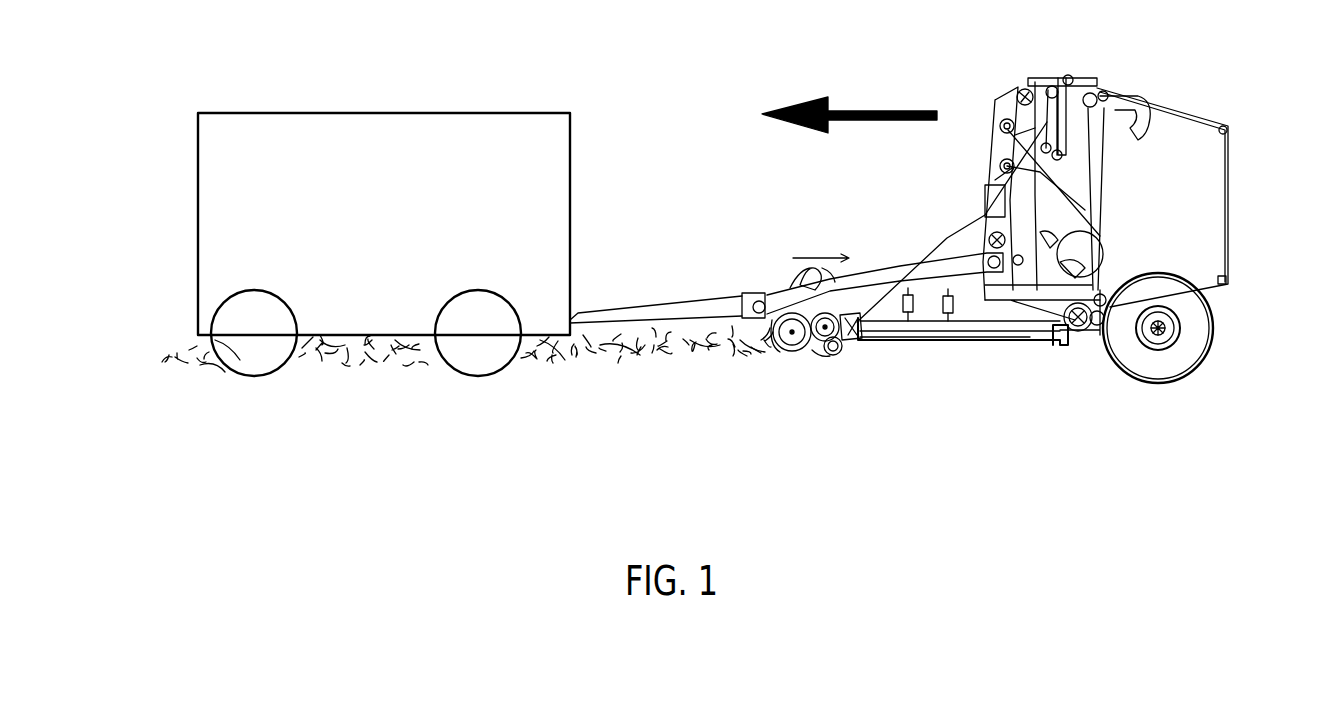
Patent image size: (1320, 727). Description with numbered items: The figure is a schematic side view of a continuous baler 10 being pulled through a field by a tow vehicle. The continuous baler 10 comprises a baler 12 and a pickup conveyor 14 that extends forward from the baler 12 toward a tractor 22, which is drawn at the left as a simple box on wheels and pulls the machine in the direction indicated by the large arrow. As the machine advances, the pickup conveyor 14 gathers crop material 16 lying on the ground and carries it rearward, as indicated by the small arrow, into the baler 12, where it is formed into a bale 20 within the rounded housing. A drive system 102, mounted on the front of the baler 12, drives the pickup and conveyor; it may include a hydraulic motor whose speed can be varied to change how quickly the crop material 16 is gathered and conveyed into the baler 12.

The continuous baler 10 is at (923, 240).
The baler 12 is at (1210, 190).
The pickup conveyor 14 is at (898, 317).
The crop material 16 is at (757, 345).
The bale 20 is at (1103, 255).
The tractor 22 is at (353, 113).
The drive system 102 is at (969, 200).